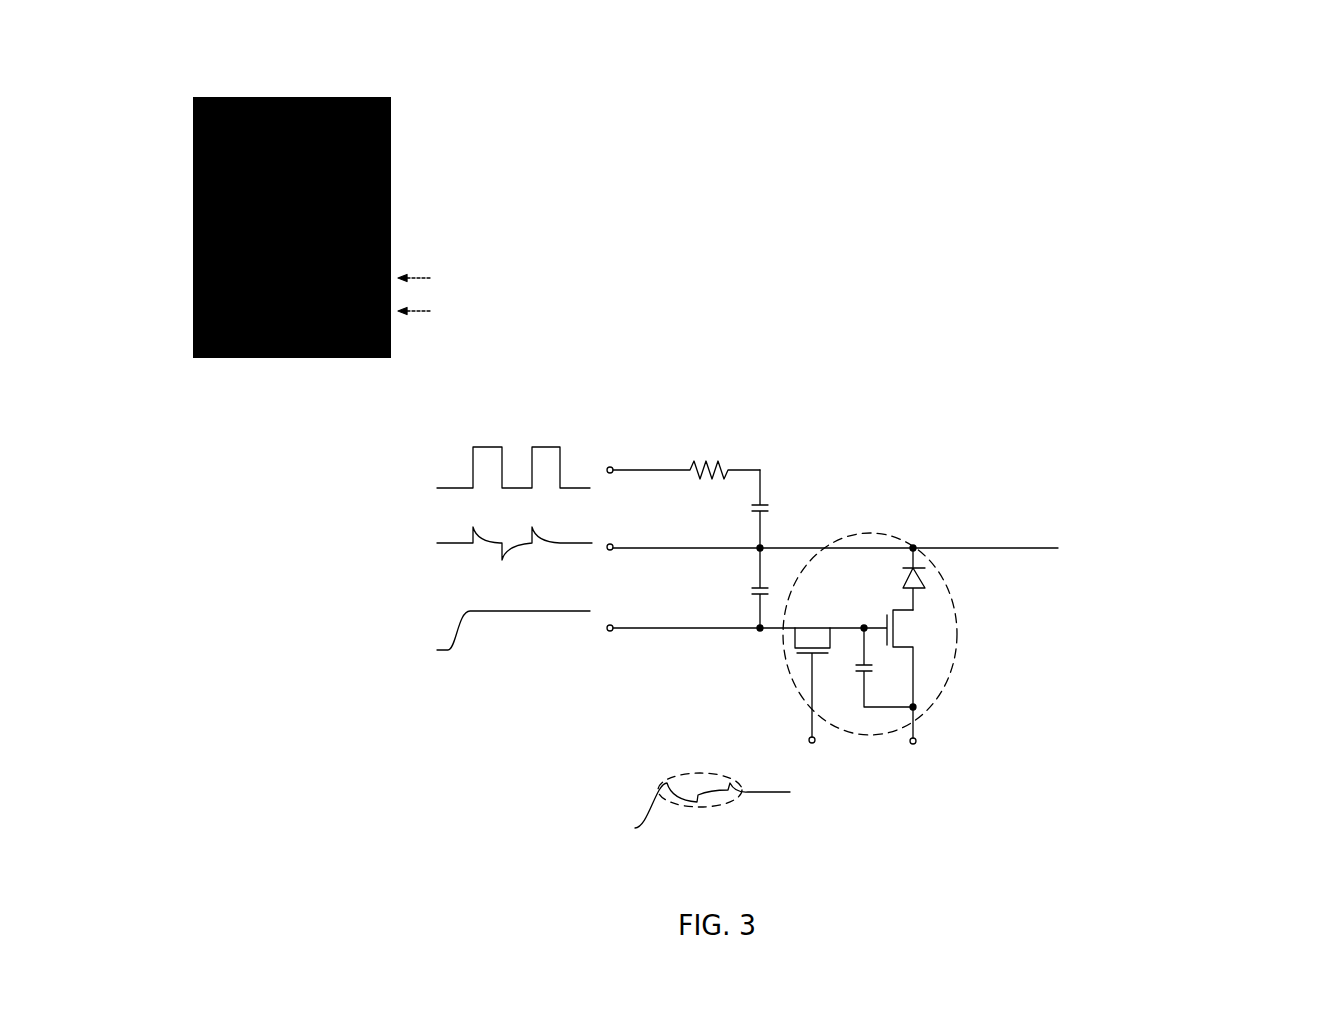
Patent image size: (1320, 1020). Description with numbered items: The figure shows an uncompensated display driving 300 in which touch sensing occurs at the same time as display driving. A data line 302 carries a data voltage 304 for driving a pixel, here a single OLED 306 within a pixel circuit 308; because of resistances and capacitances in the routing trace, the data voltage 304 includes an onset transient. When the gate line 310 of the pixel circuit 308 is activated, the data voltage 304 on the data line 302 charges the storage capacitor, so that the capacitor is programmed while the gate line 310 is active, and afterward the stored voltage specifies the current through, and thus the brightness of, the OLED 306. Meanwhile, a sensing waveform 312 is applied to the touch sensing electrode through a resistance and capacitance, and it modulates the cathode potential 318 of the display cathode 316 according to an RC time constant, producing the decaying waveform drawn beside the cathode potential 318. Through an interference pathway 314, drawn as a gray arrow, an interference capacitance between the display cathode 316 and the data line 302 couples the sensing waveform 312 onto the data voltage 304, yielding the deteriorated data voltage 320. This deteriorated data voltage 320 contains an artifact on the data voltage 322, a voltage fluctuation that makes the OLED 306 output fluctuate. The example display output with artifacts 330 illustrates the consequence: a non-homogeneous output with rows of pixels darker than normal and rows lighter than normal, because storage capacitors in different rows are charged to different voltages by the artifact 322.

The uncompensated display driving 300 is at (994, 139).
The data line 302 is at (639, 629).
The data voltage 304 is at (420, 625).
The OLED 306 is at (925, 588).
The pixel circuit 308 is at (937, 698).
The gate line 310 is at (817, 730).
The sensing waveform 312 is at (390, 467).
The interference pathway 314 is at (770, 488).
The display cathode 316 is at (1023, 552).
The cathode potential 318 is at (397, 543).
The deteriorated data voltage 320 is at (561, 805).
The artifact on the data voltage 322 is at (688, 805).
The example display output with artifacts 330 is at (391, 97).